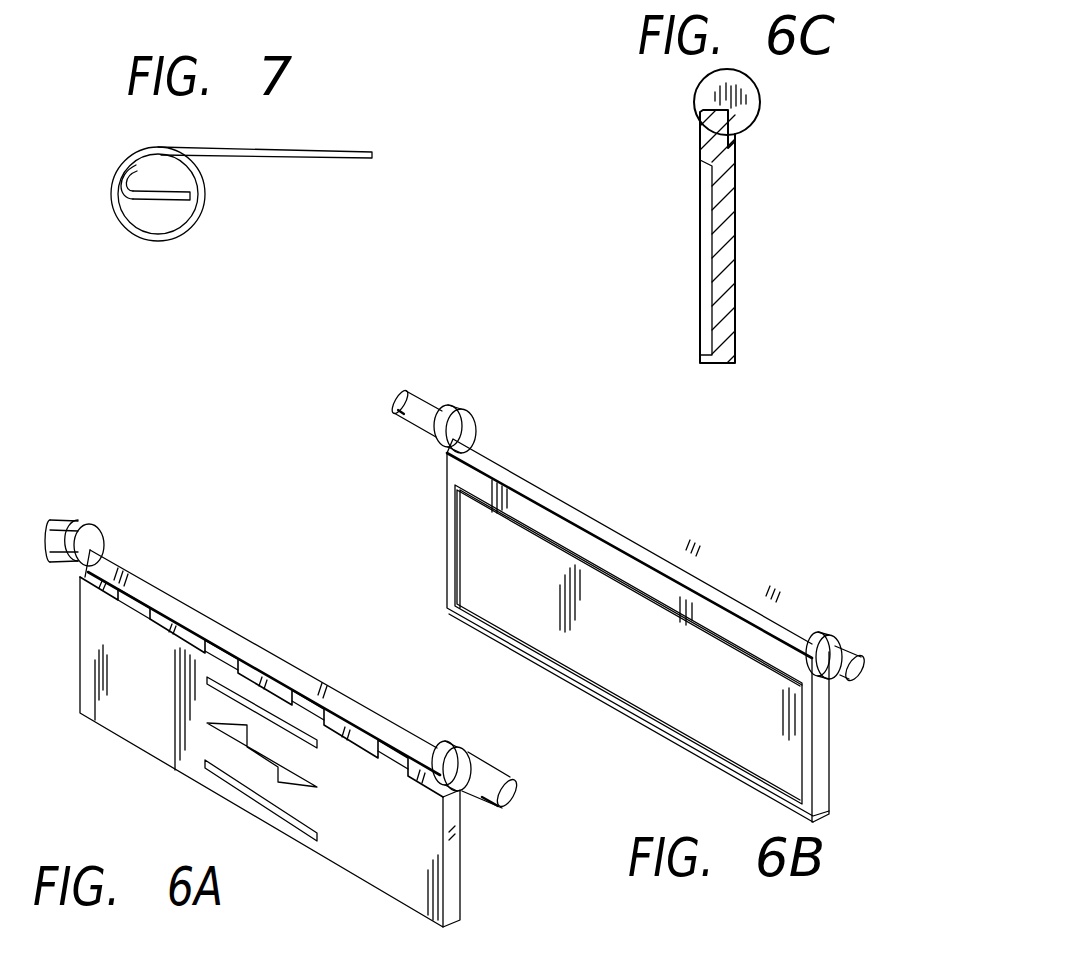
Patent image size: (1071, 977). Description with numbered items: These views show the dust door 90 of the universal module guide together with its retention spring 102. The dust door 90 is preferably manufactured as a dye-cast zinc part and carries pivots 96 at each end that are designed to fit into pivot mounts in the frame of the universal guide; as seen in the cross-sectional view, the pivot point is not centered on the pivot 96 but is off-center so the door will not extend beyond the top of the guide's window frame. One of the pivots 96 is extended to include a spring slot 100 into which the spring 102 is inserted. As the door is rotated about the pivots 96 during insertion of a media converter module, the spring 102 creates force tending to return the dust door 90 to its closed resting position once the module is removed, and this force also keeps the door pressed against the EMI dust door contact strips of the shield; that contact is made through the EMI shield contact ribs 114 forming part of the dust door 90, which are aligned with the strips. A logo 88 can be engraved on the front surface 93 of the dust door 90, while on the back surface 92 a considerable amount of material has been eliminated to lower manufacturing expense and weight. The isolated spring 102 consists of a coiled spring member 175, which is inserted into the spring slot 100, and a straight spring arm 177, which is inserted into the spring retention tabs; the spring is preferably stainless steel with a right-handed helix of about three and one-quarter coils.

In FIG. 6A, the logo 88 is at (224, 729).
In FIG. 6C, the dust door 90 is at (724, 322).
In FIG. 6A, the dust door 90 is at (266, 613).
In FIG. 6B, the dust door 90 is at (668, 540).
In FIG. 6C, the back surface 92 is at (708, 214).
In FIG. 6B, the back surface 92 is at (679, 694).
In FIG. 6C, the front surface 93 is at (742, 200).
In FIG. 6A, the front surface 93 is at (396, 868).
In FIG. 6C, the pivots 96 is at (708, 92).
In FIG. 6A, the pivots 96 is at (78, 518).
In FIG. 6B, the pivots 96 is at (440, 410).
In FIG. 6A, the spring slot 100 is at (513, 803).
In FIG. 6B, the spring slot 100 is at (392, 414).
In FIG. 7, the spring 102 is at (140, 297).
In FIG. 6A, the EMI shield contact ribs 114 is at (132, 607).
In FIG. 7, the spring member 175 is at (180, 200).
In FIG. 7, the spring arm 177 is at (344, 158).